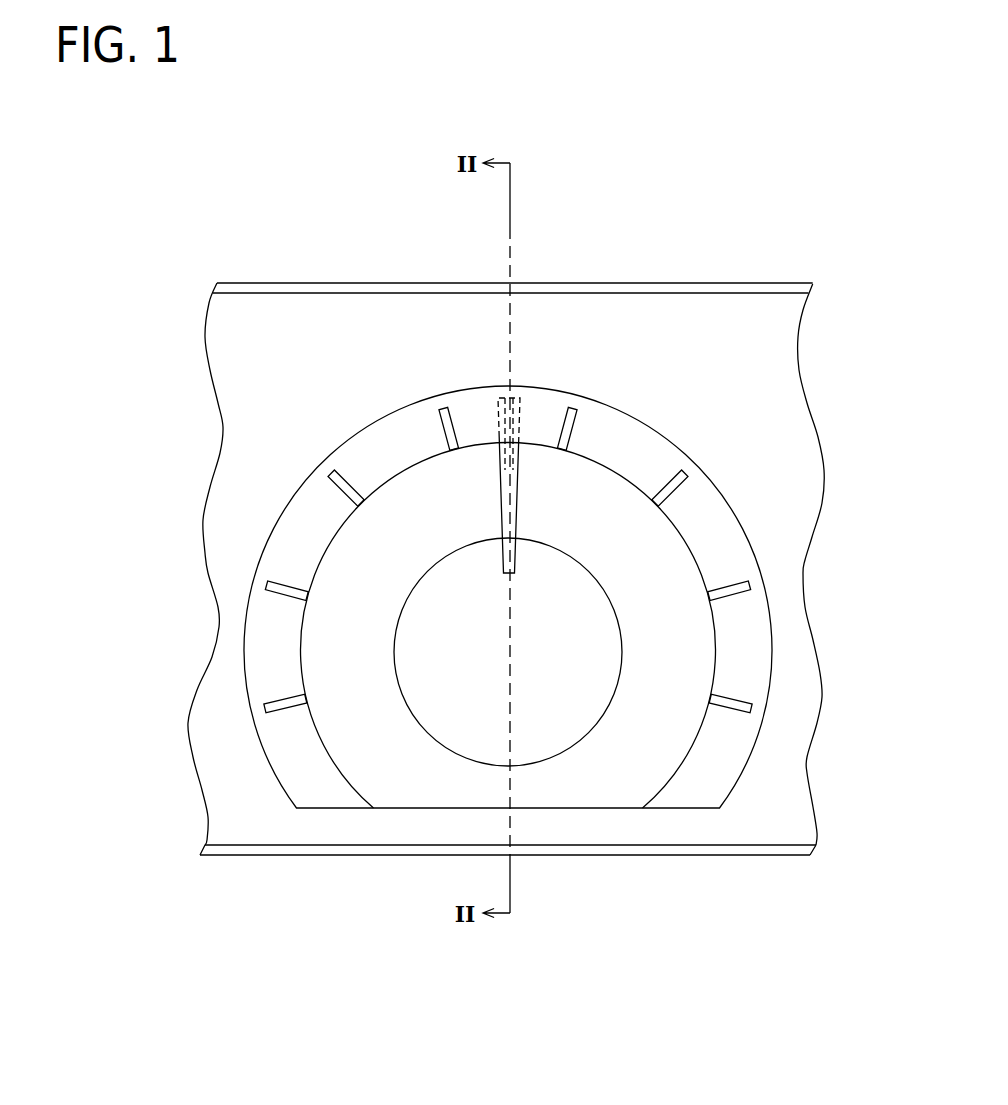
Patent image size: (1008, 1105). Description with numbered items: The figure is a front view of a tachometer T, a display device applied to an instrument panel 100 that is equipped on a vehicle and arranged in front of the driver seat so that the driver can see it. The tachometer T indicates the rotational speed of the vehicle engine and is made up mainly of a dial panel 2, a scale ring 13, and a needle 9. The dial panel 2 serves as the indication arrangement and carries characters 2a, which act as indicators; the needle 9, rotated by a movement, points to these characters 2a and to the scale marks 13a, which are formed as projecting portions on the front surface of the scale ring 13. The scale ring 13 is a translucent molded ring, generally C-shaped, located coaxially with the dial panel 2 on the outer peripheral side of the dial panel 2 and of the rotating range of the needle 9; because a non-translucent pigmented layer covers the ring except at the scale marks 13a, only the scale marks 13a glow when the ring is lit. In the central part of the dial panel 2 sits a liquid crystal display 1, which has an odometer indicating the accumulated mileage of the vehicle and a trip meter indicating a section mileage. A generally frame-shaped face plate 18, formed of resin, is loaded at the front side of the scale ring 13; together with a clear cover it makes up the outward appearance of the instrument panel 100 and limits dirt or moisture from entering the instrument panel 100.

The instrument panel 100 is at (167, 198).
The tachometer T is at (297, 422).
The face plate 18 is at (302, 370).
The liquid crystal display 1 is at (457, 588).
The scale ring 13 is at (400, 391).
The scale marks 13a is at (442, 408).
The needle 9 is at (495, 448).
The dial panel 2 is at (596, 482).
The characters 2a is at (632, 513).